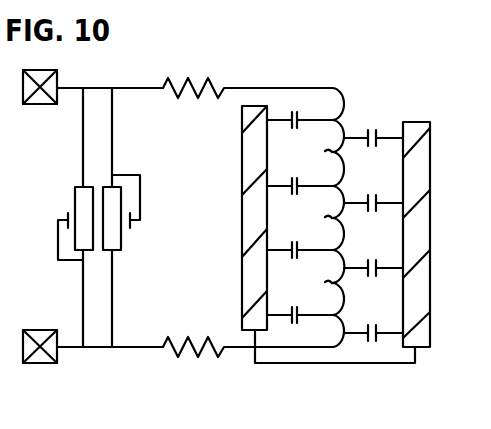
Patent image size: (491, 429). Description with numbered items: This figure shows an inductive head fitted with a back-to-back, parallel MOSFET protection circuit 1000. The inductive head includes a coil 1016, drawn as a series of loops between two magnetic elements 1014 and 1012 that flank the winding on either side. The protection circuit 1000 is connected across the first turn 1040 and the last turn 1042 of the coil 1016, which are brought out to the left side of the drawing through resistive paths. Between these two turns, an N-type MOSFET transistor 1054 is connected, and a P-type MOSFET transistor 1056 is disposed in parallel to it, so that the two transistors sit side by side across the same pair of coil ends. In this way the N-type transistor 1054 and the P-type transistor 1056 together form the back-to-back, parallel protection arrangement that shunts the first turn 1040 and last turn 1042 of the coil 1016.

The MOSFET protection circuit 1000 is at (254, 50).
The first magnetic core element 1012 is at (414, 124).
The second magnetic core element 1014 is at (247, 175).
The coil 1016 is at (317, 350).
The first turn 1040 is at (133, 88).
The last turn 1042 is at (136, 348).
The N-type MOSFET transistor 1054 is at (60, 209).
The P-type MOSFET transistor 1056 is at (125, 255).